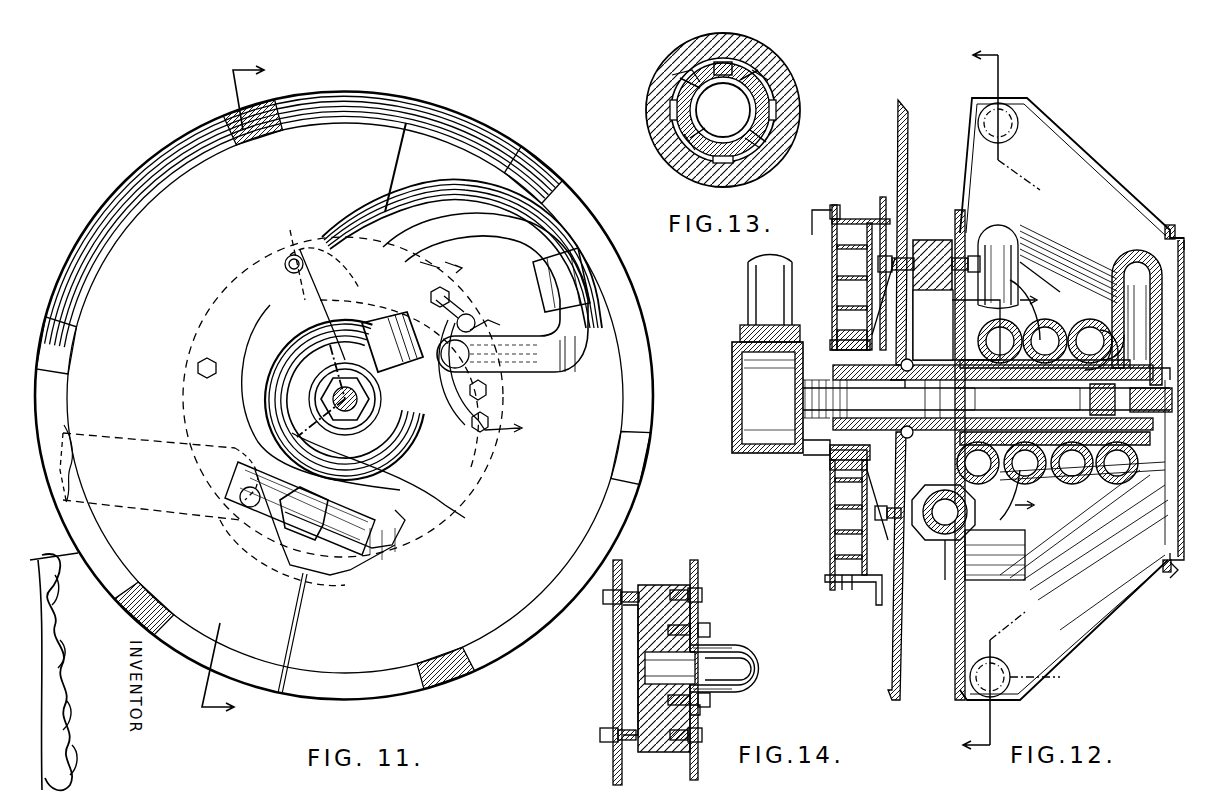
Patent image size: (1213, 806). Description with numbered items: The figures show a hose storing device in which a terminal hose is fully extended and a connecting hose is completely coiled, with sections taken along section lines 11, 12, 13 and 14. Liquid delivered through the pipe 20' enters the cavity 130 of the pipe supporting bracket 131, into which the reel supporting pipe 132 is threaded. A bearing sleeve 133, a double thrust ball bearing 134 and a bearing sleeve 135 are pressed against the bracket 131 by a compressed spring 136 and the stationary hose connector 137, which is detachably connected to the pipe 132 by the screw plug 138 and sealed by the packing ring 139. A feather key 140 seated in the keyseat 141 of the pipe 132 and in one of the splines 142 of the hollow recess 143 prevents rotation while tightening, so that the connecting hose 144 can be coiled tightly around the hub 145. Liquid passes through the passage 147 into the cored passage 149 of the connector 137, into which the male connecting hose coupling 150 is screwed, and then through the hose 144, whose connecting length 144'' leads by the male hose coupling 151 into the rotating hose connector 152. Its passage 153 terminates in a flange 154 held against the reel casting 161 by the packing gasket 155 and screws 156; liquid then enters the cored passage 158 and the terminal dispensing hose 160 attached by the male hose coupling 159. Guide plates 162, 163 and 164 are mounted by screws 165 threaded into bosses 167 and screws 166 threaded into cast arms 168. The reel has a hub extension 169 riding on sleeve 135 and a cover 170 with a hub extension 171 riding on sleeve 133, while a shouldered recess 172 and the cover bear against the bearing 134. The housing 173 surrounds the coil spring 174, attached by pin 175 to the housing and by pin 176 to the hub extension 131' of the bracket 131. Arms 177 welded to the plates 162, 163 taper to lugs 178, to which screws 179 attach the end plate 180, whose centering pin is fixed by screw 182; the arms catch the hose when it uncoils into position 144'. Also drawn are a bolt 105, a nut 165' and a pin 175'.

In FIG. 12, the section line 11- 11 is at (969, 395).
In FIG. 11, the section line 12- 12 is at (245, 385).
In FIG. 12, the section line 13- 13 is at (1025, 402).
In FIG. 11, the section line 14- 14 is at (479, 342).
In FIG. 12, the pipe 20' is at (750, 290).
In FIG. 11, the bolt 105 is at (198, 368).
In FIG. 12, the cavity 130 is at (769, 395).
In FIG. 12, the pipe supporting bracket 131 is at (956, 389).
In FIG. 12, the hub extension 131' is at (833, 321).
In FIG. 13, the reel supporting pipe 132 is at (760, 85).
In FIG. 12, the reel supporting pipe 132 is at (800, 445).
In FIG. 12, the bearing sleeve 133 is at (878, 395).
In FIG. 12, the double thrust ball bearing 134 is at (935, 395).
In FIG. 12, the bearing sleeve 135 is at (960, 395).
In FIG. 12, the compressed spring 136 is at (990, 395).
In FIG. 11, the stationary hose connector 137 is at (343, 340).
In FIG. 13, the stationary hose connector 137 is at (690, 50).
In FIG. 12, the stationary hose connector 137 is at (1150, 440).
In FIG. 12, the screw plug 138 is at (1165, 372).
In FIG. 12, the packing ring 139 is at (1085, 395).
In FIG. 13, the feather key 140 is at (752, 72).
In FIG. 12, the feather key 140 is at (1090, 322).
In FIG. 13, the keyseat 141 is at (725, 70).
In FIG. 12, the keyseat 141 is at (1040, 399).
In FIG. 13, the splines 142 is at (723, 62).
In FIG. 12, the splines 142 is at (1045, 311).
In FIG. 13, the hollow recess 143 is at (770, 125).
In FIG. 12, the hollow recess 143 is at (1070, 350).
In FIG. 11, the connecting hose 144 is at (268, 399).
In FIG. 12, the connecting hose 144 is at (1106, 464).
In FIG. 12, the uncoiled position of connecting hose 144' is at (1039, 397).
In FIG. 11, the connecting length 144'' is at (462, 237).
In FIG. 11, the hub 145 is at (300, 399).
In FIG. 12, the hub 145 is at (1040, 480).
In FIG. 12, the passage 147 is at (1030, 405).
In FIG. 11, the cored passage 149 is at (300, 362).
In FIG. 12, the cored passage 149 is at (1125, 355).
In FIG. 11, the male connecting hose coupling 150 is at (345, 380).
In FIG. 12, the male connecting hose coupling 150 is at (1160, 332).
In FIG. 11, the male hose coupling 151 is at (580, 275).
In FIG. 11, the rotating hose connector 152 is at (590, 340).
In FIG. 14, the rotating hose connector 152 is at (738, 655).
In FIG. 12, the rotating hose connector 152 is at (1030, 238).
In FIG. 11, the passage 153 is at (570, 375).
In FIG. 14, the passage 153 is at (745, 668).
In FIG. 11, the flange 154 is at (480, 330).
In FIG. 14, the packing gasket 155 is at (700, 712).
In FIG. 11, the screws 156 is at (470, 312).
In FIG. 14, the screws 156 is at (706, 630).
In FIG. 11, the cored passage 158 is at (445, 487).
In FIG. 14, the cored passage 158 is at (655, 670).
In FIG. 11, the male hose coupling 159 is at (330, 568).
In FIG. 12, the male hose coupling 159 is at (985, 548).
In FIG. 11, the terminal dispensing hose 160 is at (130, 495).
In FIG. 12, the terminal dispensing hose 160 is at (940, 545).
In FIG. 11, the reel casting 161 is at (258, 270).
In FIG. 14, the reel casting 161 is at (650, 622).
In FIG. 12, the reel casting 161 is at (930, 240).
In FIG. 11, the guide plate 162 is at (372, 700).
In FIG. 14, the guide plate 162 is at (694, 772).
In FIG. 11, the guide plate 163 is at (120, 190).
In FIG. 12, the guide plate 163 is at (955, 685).
In FIG. 14, the guide plate 164 is at (618, 770).
In FIG. 12, the guide plate 164 is at (898, 135).
In FIG. 11, the screws 165 is at (306, 241).
In FIG. 14, the screws 165 is at (675, 651).
In FIG. 12, the screws 165 is at (862, 393).
In FIG. 12, the nut 165' is at (943, 503).
In FIG. 11, the screws 166 is at (240, 505).
In FIG. 12, the screws 166 is at (875, 512).
In FIG. 12, the bosses 167 is at (918, 292).
In FIG. 11, the cast arms 168 is at (159, 475).
In FIG. 12, the cast arms 168 is at (985, 488).
In FIG. 12, the hub extension 169 is at (992, 360).
In FIG. 12, the cover 170 is at (850, 470).
In FIG. 12, the hub extension 171 is at (820, 448).
In FIG. 12, the shouldered recess 172 is at (902, 393).
In FIG. 12, the housing 173 is at (850, 219).
In FIG. 12, the coil spring 174 is at (840, 270).
In FIG. 12, the pin 175 is at (840, 595).
In FIG. 12, the pin 175' is at (814, 221).
In FIG. 12, the pin 176 is at (840, 455).
In FIG. 11, the arms 177 is at (258, 108).
In FIG. 12, the arms 177 is at (1090, 150).
In FIG. 12, the lugs 178 is at (1168, 228).
In FIG. 12, the screws 179 is at (1190, 218).
In FIG. 12, the end plate 180 is at (1178, 500).
In FIG. 12, the screw 182 is at (1172, 400).